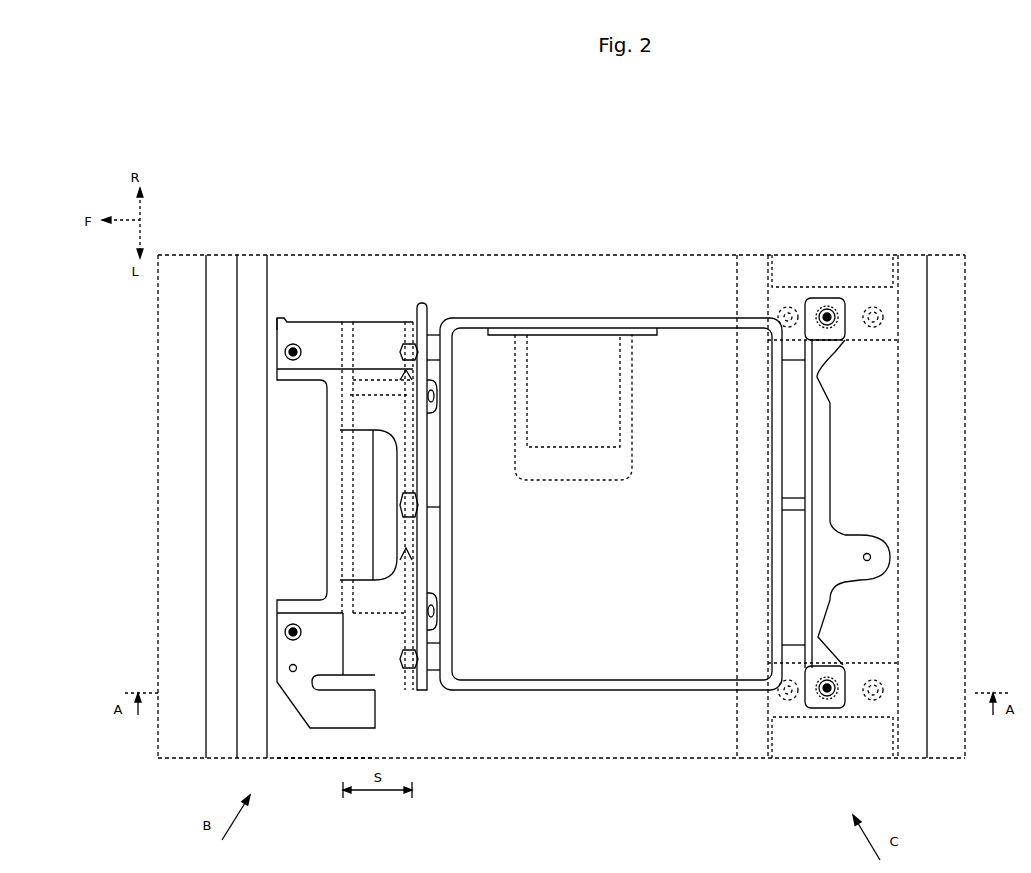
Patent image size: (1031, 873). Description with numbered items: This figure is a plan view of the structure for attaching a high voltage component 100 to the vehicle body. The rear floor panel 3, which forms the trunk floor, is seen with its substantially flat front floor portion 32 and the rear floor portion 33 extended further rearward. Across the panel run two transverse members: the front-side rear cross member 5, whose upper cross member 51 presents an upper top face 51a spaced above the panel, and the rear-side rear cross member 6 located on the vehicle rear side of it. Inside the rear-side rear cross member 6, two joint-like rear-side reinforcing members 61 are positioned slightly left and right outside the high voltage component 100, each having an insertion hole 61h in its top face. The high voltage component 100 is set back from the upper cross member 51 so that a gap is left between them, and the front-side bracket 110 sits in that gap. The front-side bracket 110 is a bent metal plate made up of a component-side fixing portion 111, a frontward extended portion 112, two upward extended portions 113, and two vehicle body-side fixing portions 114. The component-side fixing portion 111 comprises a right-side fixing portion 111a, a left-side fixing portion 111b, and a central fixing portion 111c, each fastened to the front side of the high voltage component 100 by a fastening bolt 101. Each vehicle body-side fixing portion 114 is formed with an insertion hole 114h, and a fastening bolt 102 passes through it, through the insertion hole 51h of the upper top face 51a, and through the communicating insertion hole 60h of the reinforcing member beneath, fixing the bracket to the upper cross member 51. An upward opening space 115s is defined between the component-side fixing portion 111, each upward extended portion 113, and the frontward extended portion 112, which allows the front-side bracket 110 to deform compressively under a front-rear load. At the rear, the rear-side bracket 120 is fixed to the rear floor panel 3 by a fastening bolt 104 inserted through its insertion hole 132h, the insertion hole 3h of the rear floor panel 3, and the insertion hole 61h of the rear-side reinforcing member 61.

The rear floor panel 3 is at (568, 537).
The front floor portion 32 is at (548, 740).
The rear floor portion 33 is at (943, 742).
The front-side rear cross member 5 is at (250, 538).
The upper cross member 51 is at (205, 547).
The upper top face 51a is at (312, 747).
The rear-side rear cross member 6 is at (869, 504).
The rear-side reinforcing member 61 is at (830, 504).
The high voltage component 100 is at (685, 316).
The fastening bolt 101 is at (450, 491).
The fastening bolt 102 is at (199, 497).
The fastening bolt 104 is at (832, 324).
The front-side bracket 110 is at (280, 510).
The component-side fixing portion 111 is at (442, 501).
The right-side fixing portion 111a is at (437, 383).
The left-side fixing portion 111b is at (437, 628).
The central fixing portion 111c is at (420, 472).
The frontward extended portion 112 is at (425, 300).
The upward extended portion 113 is at (343, 435).
The vehicle body-side fixing portion 114 is at (236, 510).
The upward opening space 115s is at (348, 330).
The rear-side bracket 120 is at (836, 503).
The insertion hole 114h is at (178, 484).
The insertion hole 51h is at (178, 484).
The insertion hole 60h is at (178, 484).
The insertion hole 132h is at (811, 504).
The insertion hole 3h is at (811, 504).
The insertion hole 61h is at (824, 308).